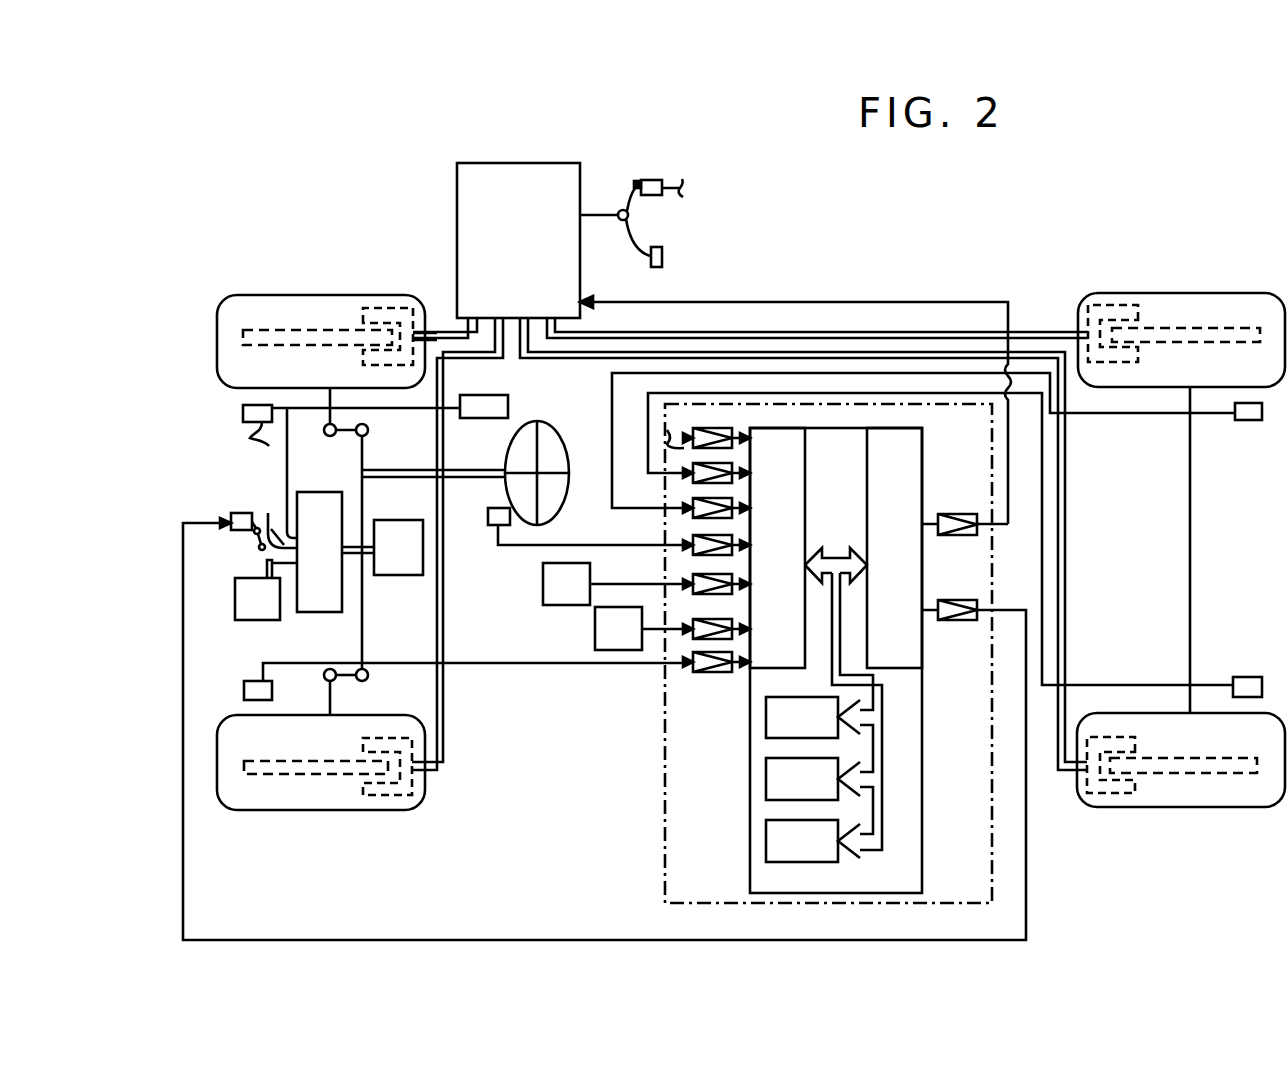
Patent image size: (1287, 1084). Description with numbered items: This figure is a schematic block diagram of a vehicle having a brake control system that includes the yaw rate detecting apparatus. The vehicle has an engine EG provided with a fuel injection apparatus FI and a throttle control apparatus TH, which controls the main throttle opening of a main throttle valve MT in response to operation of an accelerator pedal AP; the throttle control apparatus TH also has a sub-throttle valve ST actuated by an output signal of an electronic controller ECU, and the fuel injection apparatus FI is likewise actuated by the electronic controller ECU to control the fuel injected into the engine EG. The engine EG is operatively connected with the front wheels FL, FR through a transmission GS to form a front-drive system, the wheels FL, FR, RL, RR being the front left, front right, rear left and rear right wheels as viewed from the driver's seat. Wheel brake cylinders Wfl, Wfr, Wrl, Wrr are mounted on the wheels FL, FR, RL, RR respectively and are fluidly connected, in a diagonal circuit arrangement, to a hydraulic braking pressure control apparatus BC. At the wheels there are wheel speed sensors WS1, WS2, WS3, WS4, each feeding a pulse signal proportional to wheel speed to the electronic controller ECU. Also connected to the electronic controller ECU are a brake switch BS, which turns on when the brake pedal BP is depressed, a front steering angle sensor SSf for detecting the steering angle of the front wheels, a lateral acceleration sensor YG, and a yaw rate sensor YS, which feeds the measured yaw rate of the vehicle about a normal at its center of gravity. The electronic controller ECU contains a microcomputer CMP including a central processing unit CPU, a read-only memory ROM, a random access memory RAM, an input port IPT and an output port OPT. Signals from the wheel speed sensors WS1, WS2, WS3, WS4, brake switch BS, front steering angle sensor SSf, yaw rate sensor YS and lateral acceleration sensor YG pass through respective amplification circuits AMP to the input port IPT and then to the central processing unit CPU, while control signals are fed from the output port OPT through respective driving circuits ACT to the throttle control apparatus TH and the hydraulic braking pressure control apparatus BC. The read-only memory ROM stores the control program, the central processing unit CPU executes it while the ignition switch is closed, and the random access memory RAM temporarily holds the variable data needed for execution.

The hydraulic braking pressure control apparatus BC is at (457, 205).
The brake switch BS is at (652, 178).
The brake pedal BP is at (640, 245).
The front right wheel FR is at (250, 295).
The front left wheel FL is at (252, 810).
The rear right wheel RR is at (1200, 293).
The rear left wheel RL is at (1203, 807).
The wheel brake cylinder Wfr is at (395, 312).
The wheel brake cylinder Wfl is at (400, 807).
The wheel brake cylinder Wrr is at (1098, 308).
The wheel brake cylinder Wrl is at (1100, 785).
The wheel speed sensor WS1 is at (244, 690).
The wheel speed sensor WS2 is at (243, 412).
The wheel speed sensor WS3 is at (1255, 660).
The wheel speed sensor WS4 is at (1247, 420).
The engine EG is at (330, 503).
The transmission GS is at (382, 547).
The fuel injection apparatus FI is at (266, 590).
The throttle control apparatus TH is at (263, 514).
The sub-throttle valve ST is at (237, 513).
The main throttle valve MT is at (250, 543).
The accelerator pedal AP is at (508, 405).
The front steering angle sensor SSf is at (491, 516).
The yaw rate sensor YS is at (618, 584).
The lateral acceleration sensor YG is at (644, 628).
The electronic controller ECU is at (665, 717).
The amplification circuits AMP is at (710, 672).
The microcomputer CMP is at (922, 817).
The input port IPT is at (800, 467).
The output port OPT is at (916, 467).
The central processing unit CPU is at (813, 717).
The read-only memory ROM is at (813, 779).
The random access memory RAM is at (813, 841).
The driving circuits ACT is at (962, 501).